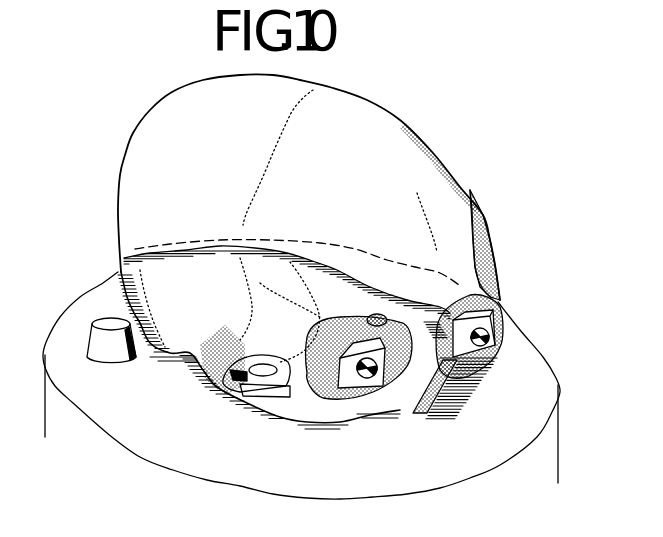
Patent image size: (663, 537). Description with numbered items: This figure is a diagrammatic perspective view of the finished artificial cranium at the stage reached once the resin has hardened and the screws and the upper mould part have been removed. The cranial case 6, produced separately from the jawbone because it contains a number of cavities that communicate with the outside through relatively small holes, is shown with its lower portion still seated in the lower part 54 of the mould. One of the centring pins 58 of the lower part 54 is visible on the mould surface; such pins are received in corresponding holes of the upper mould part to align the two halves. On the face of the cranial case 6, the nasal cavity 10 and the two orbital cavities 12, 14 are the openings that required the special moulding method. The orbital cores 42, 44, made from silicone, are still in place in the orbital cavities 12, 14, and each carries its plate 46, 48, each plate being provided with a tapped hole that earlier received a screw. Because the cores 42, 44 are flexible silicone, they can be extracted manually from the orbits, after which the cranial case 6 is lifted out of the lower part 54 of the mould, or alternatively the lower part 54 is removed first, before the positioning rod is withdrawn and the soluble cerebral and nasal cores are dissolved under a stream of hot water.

The cranial case 6 is at (396, 115).
The nasal cavity 10 is at (457, 413).
The orbital cavity 12 is at (360, 320).
The orbital cavity 14 is at (480, 225).
The core 42 is at (305, 422).
The core 44 is at (498, 301).
The plate 46 is at (356, 408).
The plate 48 is at (495, 351).
The lower part of the mould 54 is at (567, 383).
The centring pin 58 is at (95, 323).